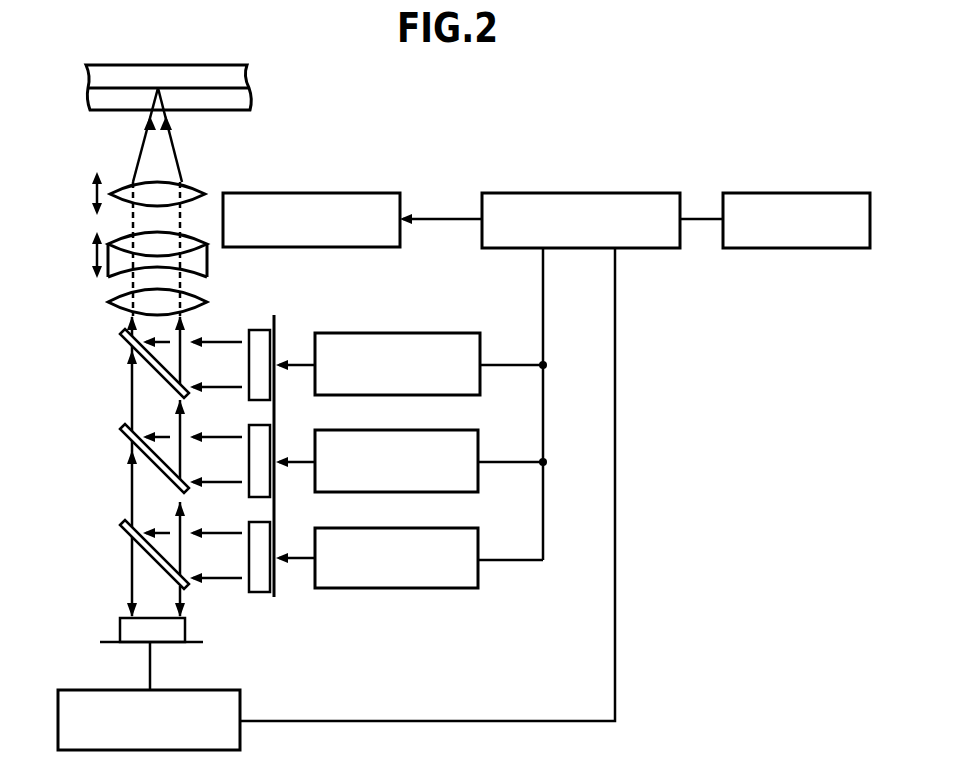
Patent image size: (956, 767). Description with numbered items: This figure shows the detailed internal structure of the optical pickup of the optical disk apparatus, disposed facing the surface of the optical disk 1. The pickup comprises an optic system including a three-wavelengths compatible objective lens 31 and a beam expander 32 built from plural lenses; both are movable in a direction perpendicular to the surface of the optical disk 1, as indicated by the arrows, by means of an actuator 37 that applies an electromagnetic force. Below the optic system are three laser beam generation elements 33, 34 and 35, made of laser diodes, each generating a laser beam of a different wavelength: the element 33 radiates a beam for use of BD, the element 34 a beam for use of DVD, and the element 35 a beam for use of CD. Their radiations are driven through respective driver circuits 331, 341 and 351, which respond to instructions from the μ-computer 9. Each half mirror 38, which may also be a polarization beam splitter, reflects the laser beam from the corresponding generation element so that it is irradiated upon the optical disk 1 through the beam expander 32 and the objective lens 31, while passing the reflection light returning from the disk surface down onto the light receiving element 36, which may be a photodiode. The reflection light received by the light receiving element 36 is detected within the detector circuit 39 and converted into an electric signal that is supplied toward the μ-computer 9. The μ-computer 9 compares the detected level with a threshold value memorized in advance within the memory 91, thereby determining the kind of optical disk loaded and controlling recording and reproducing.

The optical disk 1 is at (250, 78).
The objective lens 31 is at (205, 192).
The beam expander 32 is at (208, 268).
The laser beam generation element 33 is at (255, 329).
The laser beam generation element 34 is at (257, 476).
The laser beam generation element 35 is at (252, 593).
The driver circuit 331 is at (462, 333).
The driver circuit 341 is at (462, 430).
The driver circuit 351 is at (462, 528).
The light receiving element 36 is at (120, 630).
The actuator 37 is at (330, 193).
The half mirror 38 is at (121, 336).
The detector circuit 39 is at (222, 690).
The microcomputer 9 is at (612, 193).
The memory 91 is at (810, 193).